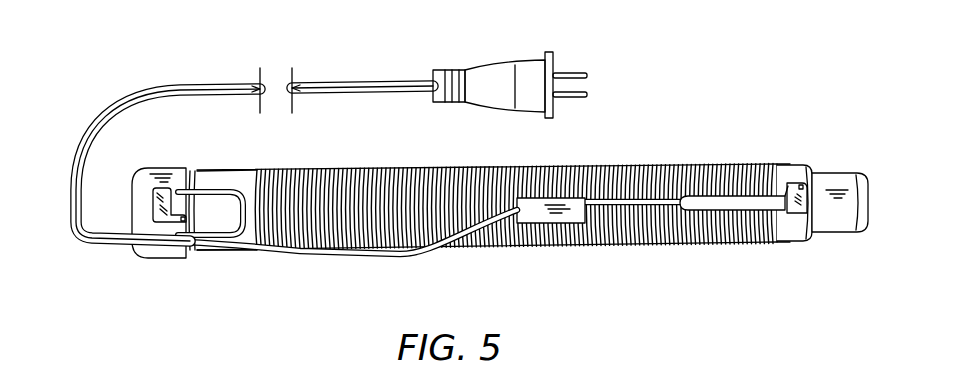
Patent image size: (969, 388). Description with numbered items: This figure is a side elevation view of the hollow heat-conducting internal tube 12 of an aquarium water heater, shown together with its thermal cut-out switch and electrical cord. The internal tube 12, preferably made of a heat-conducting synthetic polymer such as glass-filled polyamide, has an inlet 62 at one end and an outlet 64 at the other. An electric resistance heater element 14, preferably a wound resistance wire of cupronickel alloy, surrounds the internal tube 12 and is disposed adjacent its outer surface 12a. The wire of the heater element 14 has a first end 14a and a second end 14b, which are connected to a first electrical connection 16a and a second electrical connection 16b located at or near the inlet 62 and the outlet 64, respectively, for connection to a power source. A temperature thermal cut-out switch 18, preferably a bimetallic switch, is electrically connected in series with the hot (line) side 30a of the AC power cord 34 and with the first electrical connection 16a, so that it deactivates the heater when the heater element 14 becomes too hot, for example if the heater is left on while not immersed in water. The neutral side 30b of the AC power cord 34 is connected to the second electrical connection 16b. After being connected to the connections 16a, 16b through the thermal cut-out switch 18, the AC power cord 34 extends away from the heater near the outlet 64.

The hollow heat-conducting internal tube 12 is at (806, 240).
The outer surface 12a is at (780, 245).
The electric resistance heater element 14 is at (642, 171).
The first end 14a is at (783, 164).
The second end 14b is at (245, 190).
The first electrical connection 16a is at (800, 183).
The second electrical connection 16b is at (153, 218).
The temperature thermal cut-out switch 18 is at (571, 224).
The hot (line) side 30a is at (332, 257).
The neutral side 30b is at (225, 191).
The AC power cord 34 is at (364, 78).
The inlet 62 is at (868, 205).
The outlet 64 is at (150, 197).